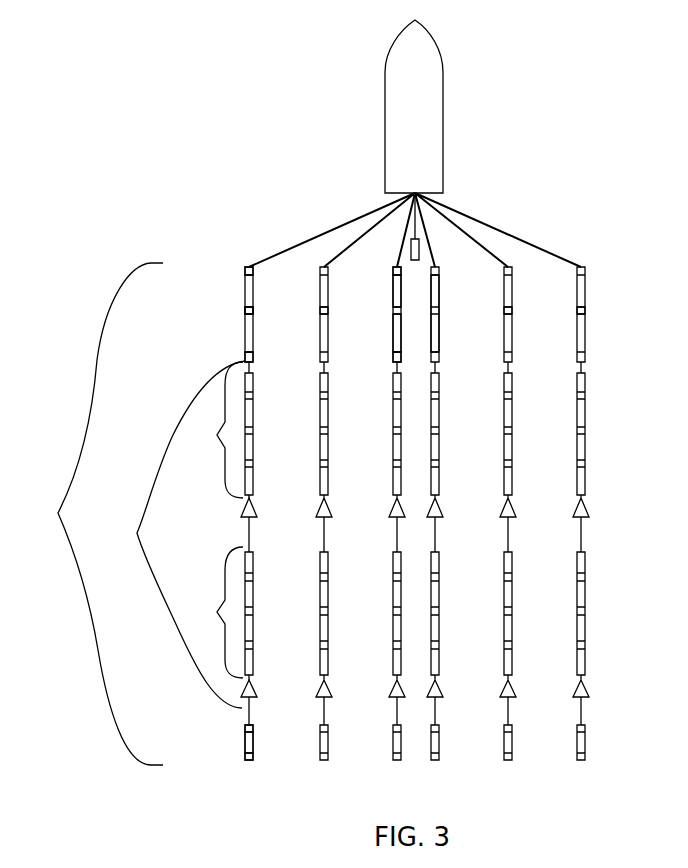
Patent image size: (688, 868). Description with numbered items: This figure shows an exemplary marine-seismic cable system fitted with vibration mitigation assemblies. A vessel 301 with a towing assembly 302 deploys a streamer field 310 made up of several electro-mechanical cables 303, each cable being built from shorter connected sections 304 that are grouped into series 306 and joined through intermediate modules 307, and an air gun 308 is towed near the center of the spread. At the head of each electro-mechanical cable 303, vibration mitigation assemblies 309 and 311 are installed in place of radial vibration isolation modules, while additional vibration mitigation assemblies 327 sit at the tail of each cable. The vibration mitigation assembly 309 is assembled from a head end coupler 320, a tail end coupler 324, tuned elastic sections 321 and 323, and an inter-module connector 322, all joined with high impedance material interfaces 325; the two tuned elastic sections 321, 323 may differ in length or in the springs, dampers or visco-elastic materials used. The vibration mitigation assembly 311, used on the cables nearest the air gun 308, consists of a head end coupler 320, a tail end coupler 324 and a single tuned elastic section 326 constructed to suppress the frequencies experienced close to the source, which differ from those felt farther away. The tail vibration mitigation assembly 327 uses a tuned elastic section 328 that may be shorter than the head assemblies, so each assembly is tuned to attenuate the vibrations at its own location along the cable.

The survey vessel 301 is at (386, 60).
The lead-in cables 302 is at (424, 228).
The electro-mechanical cable 303 is at (205, 516).
The streamer section 304 is at (257, 383).
The group of streamer sections 306 is at (239, 525).
The connector module 307 is at (258, 508).
The air gun 308 is at (420, 256).
The vibration mitigation assembly 309 is at (255, 317).
The streamer field 310 is at (322, 518).
The vibration mitigation assembly 311 is at (393, 297).
The head end coupler 320 is at (245, 269).
The tuned elastic section 321 is at (245, 297).
The inter-module connector 322 is at (245, 313).
The tuned elastic section 323 is at (245, 338).
The tail end coupler 324 is at (245, 356).
The high impedance material interface 325 is at (255, 272).
The tuned elastic section 326 is at (393, 348).
The vibration mitigation assembly 327 is at (245, 738).
The tuned elastic section 328 is at (254, 741).